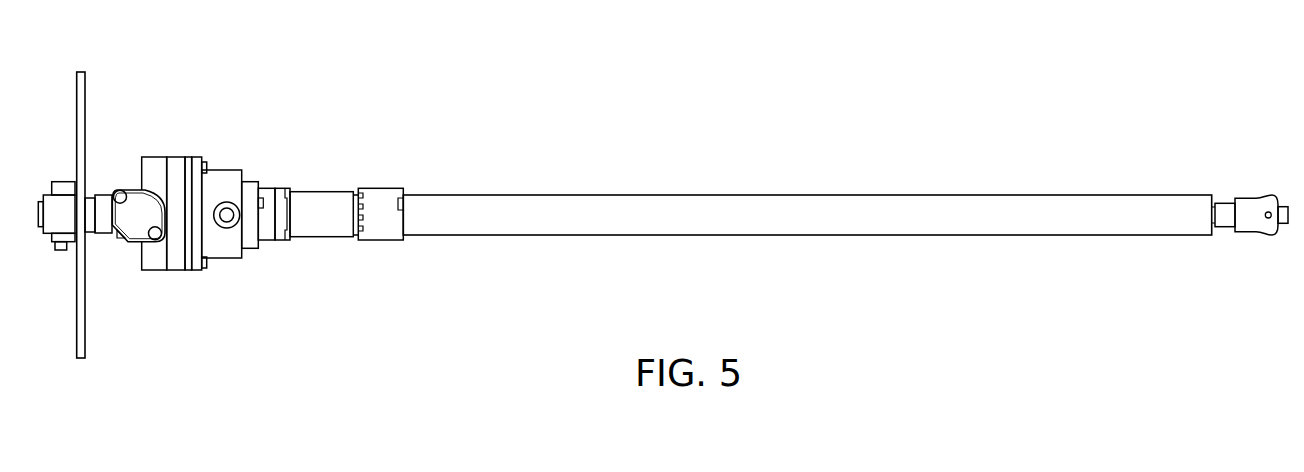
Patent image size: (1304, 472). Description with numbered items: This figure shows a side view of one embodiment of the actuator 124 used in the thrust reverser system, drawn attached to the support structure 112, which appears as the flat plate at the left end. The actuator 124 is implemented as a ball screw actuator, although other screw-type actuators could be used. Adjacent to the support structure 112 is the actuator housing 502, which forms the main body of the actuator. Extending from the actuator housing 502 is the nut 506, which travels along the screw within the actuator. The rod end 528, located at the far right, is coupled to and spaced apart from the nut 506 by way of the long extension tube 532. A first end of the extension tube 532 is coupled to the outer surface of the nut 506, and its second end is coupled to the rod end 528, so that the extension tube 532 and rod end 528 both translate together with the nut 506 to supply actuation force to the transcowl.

The support structure 112 is at (85, 97).
The actuator 124 is at (993, 122).
The actuator housing 502 is at (222, 170).
The nut 506 is at (323, 192).
The rod end 528 is at (1241, 198).
The extension tube 532 is at (802, 195).